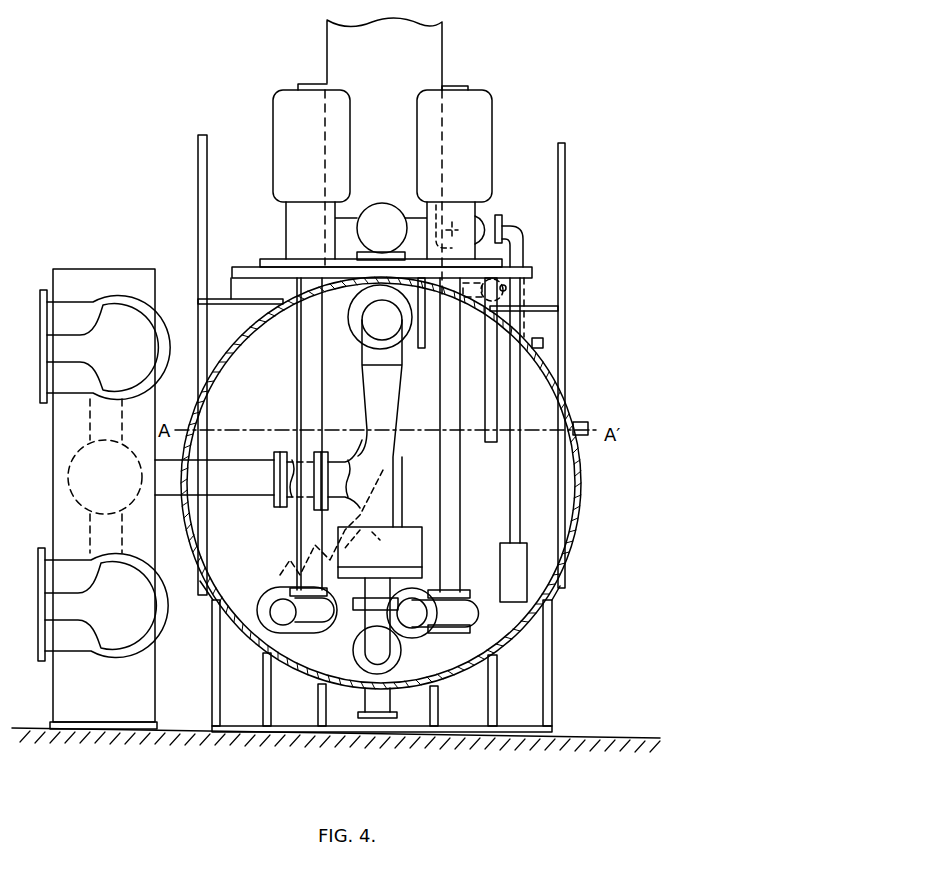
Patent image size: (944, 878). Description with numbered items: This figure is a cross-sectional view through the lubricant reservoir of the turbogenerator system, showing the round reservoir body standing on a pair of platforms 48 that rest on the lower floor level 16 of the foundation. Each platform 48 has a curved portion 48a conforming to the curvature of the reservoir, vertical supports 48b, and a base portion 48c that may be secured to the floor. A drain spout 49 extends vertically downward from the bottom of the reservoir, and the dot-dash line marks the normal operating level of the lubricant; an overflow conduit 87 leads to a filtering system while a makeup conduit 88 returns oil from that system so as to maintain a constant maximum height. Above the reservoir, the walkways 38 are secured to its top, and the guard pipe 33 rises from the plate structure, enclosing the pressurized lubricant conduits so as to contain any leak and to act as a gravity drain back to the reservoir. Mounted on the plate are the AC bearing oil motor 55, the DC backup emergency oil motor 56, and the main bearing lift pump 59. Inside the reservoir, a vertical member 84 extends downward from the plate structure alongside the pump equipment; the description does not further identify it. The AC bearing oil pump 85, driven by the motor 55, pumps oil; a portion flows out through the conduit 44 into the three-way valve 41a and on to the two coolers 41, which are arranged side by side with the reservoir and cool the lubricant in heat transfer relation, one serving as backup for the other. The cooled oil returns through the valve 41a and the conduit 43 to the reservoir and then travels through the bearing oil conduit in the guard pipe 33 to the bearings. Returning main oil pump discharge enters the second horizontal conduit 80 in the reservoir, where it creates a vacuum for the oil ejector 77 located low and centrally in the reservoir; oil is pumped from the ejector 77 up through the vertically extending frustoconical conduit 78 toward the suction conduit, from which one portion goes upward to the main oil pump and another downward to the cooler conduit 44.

The lower floor level 16 is at (252, 738).
The guard pipe 33 is at (437, 48).
The walkways 38 is at (222, 300).
The coolers 41 is at (122, 318).
The three-way valve 41a is at (68, 462).
The conduit 43 is at (323, 500).
The conduit 44 is at (236, 487).
The platforms 48 is at (552, 652).
The curved portion 48a is at (458, 672).
The vertical supports 48b is at (493, 695).
The base portion 48c is at (550, 737).
The drain spout 49 is at (382, 718).
The AC bearing oil motor 55 is at (285, 112).
The DC backup emergency oil motor 56 is at (483, 123).
The main bearing lift pump 59 is at (375, 210).
The oil ejector 77 is at (413, 533).
The frustoconical conduit 78 is at (398, 477).
The second horizontal conduit 80 is at (383, 647).
The rod 84 is at (307, 363).
The AC bearing oil pump 85 is at (310, 610).
The overflow conduit 87 is at (581, 422).
The makeup conduit 88 is at (543, 343).